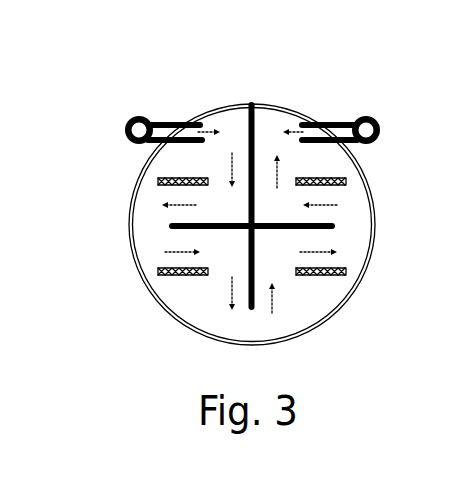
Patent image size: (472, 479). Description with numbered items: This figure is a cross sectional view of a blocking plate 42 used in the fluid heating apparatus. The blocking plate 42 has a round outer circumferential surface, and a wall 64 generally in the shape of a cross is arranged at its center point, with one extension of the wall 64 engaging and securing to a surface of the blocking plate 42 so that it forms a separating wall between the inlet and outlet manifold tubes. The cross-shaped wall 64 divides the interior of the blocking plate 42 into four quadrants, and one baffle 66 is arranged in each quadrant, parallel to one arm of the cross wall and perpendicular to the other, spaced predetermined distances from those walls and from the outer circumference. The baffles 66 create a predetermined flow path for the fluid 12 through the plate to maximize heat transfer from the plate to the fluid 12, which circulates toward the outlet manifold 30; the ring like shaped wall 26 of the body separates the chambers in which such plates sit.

The fluid 12 is at (222, 163).
The ring like shaped wall 26 is at (136, 112).
The outlet manifold 30 is at (357, 110).
The blocking plate 42 is at (372, 280).
The wall 64 is at (260, 181).
The baffles 66 is at (173, 187).